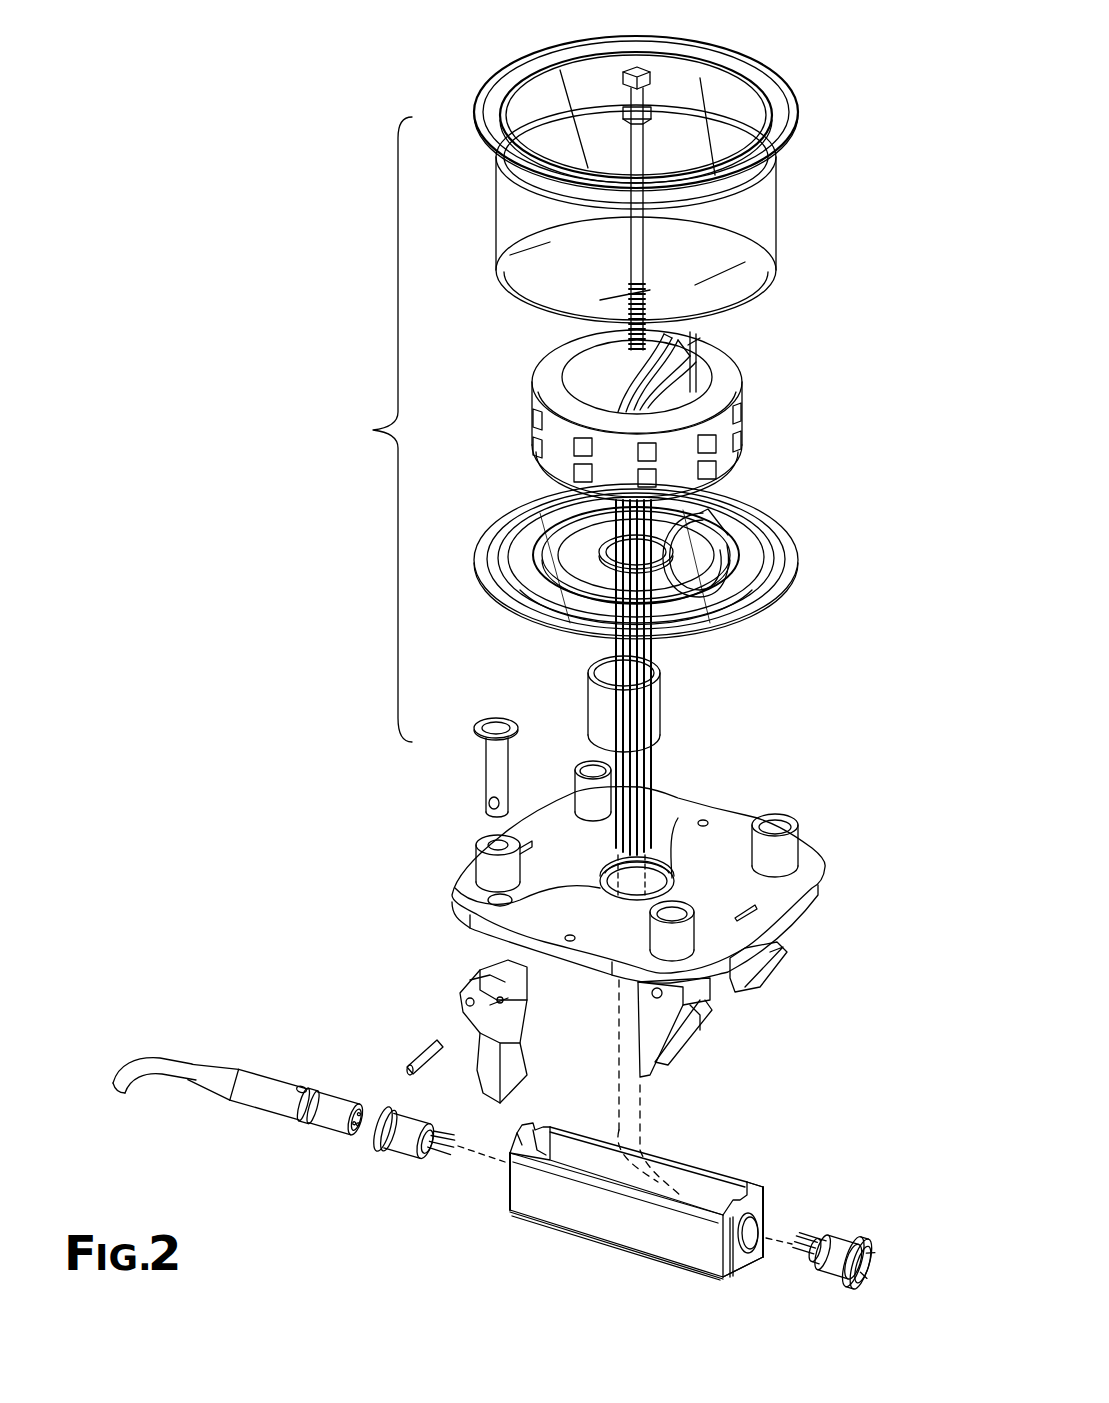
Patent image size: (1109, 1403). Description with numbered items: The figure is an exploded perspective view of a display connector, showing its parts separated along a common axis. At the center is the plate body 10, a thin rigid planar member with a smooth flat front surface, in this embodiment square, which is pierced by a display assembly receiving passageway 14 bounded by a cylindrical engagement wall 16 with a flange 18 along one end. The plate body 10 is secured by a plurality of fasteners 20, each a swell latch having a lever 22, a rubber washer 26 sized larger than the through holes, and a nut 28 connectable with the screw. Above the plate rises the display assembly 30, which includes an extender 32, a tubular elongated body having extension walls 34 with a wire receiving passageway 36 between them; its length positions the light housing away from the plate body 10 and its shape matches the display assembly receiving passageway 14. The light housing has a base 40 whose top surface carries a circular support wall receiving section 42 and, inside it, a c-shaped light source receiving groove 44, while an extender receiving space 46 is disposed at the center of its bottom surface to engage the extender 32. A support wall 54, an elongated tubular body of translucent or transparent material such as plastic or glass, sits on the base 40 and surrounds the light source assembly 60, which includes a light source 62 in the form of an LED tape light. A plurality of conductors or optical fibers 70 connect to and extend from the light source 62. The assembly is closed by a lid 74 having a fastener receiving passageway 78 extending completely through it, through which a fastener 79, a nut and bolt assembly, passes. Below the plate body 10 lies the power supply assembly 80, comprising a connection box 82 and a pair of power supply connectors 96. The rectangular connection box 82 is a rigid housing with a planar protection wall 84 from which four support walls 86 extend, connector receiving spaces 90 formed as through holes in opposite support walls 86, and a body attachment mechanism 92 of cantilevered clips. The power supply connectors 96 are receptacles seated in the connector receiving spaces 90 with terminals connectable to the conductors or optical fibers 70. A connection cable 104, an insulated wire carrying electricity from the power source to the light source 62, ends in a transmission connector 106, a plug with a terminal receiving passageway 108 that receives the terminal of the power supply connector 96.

The plate body 10 is at (825, 868).
The display assembly receiving passageway 14 is at (632, 886).
The engagement wall 16 is at (664, 862).
The flange 18 is at (490, 902).
The fastener 20 is at (790, 812).
The lever 22 is at (460, 990).
The rubber washer 26 is at (476, 860).
The nut 28 is at (482, 750).
The display assembly 30 is at (366, 429).
The extender 32 is at (660, 714).
The extension wall 34 is at (590, 706).
The wire receiving passageway 36 is at (652, 666).
The base 40 is at (790, 576).
The support wall receiving section 42 is at (506, 532).
The light source receiving groove 44 is at (703, 518).
The extender receiving space 46 is at (733, 603).
The support wall 54 is at (780, 214).
The light source assembly 60 is at (742, 378).
The light source 62 is at (745, 438).
The conductors or optical fibers 70 is at (692, 338).
The lid 74 is at (800, 110).
The fastener receiving passageway 78 is at (618, 112).
The fastener 79 is at (648, 73).
The power supply assembly 80 is at (661, 1196).
The connection box 82 is at (604, 1236).
The protection wall 84 is at (660, 1240).
The support walls 86 is at (510, 1190).
The connector receiving spaces 90 is at (764, 1230).
The body attachment mechanism 92 is at (752, 1202).
The power supply connectors 96 is at (400, 1152).
The connection cable 104 is at (152, 1072).
The transmission connector 106 is at (328, 1095).
The terminal receiving passageway 108 is at (342, 1132).